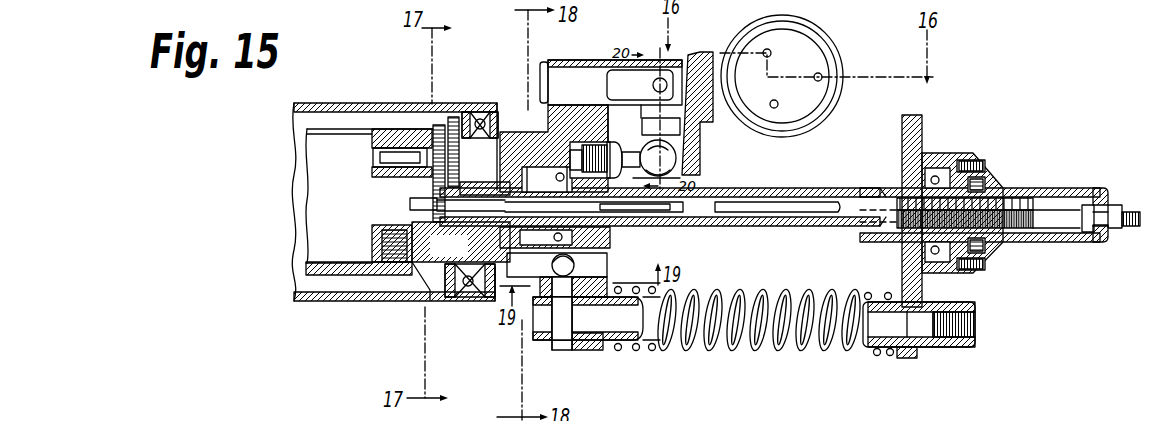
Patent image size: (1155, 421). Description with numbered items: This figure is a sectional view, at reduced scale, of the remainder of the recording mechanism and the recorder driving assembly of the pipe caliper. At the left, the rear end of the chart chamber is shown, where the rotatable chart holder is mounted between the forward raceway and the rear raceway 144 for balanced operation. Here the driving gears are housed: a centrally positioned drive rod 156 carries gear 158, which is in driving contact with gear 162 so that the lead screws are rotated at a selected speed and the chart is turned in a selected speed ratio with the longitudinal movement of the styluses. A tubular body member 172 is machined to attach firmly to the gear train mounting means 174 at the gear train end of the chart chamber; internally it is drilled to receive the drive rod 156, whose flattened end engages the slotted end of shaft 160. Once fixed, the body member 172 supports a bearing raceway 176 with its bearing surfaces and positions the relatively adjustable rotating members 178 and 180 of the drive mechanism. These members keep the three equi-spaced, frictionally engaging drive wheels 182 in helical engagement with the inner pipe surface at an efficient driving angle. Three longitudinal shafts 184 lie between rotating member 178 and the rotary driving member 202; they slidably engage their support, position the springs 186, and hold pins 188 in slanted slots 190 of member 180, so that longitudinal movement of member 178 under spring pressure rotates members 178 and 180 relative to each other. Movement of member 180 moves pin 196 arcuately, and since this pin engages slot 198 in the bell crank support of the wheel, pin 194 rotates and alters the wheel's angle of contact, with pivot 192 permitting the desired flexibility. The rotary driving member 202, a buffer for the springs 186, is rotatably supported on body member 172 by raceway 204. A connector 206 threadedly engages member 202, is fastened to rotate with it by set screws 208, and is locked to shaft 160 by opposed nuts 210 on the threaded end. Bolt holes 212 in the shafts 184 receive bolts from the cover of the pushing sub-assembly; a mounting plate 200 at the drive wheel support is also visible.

The rear raceway 144 is at (464, 298).
The drive rod 156 is at (410, 205).
The gear 158 is at (461, 222).
The shaft 160 is at (715, 222).
The gear 162 is at (436, 122).
The body member 172 is at (822, 222).
The gear train mounting means 174 is at (407, 280).
The bearing raceway 176 is at (588, 236).
The rotating member 178 is at (590, 348).
The rotating member 180 is at (683, 190).
The drive wheels 182 is at (813, 73).
The longitudinal shafts 184 is at (730, 355).
The springs 186 is at (840, 290).
The pins 188 is at (550, 340).
The slanted slots 190 is at (587, 265).
The pivot 192 is at (658, 78).
The pin 194 is at (560, 80).
The pin 196 is at (700, 157).
The slot 198 is at (692, 134).
The mounting plate 200 is at (698, 55).
The rotary driving member 202 is at (912, 295).
The raceway 204 is at (992, 260).
The connector 206 is at (1002, 185).
The set screws 208 is at (962, 160).
The opposed nuts 210 is at (1112, 241).
The bolt holes 212 is at (958, 325).